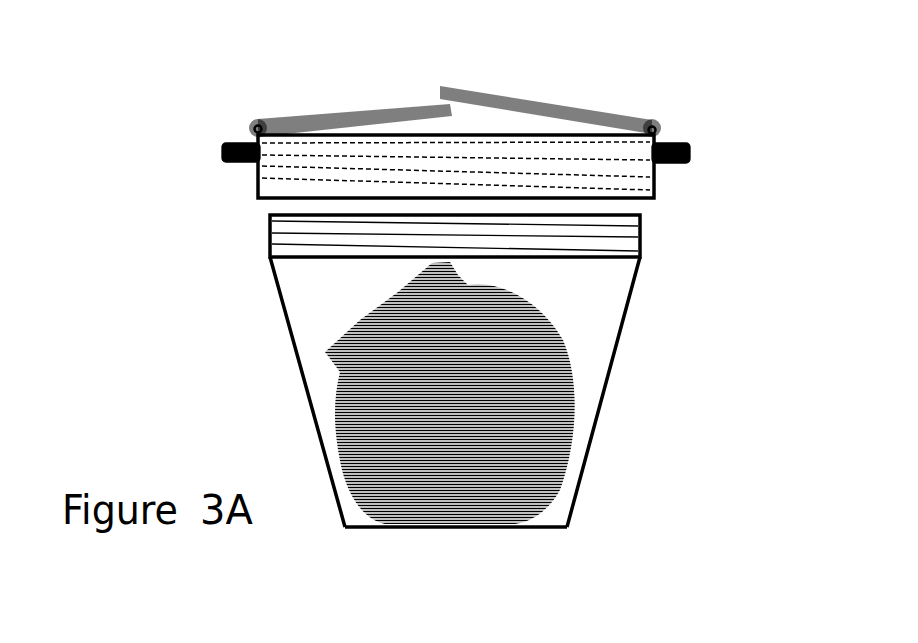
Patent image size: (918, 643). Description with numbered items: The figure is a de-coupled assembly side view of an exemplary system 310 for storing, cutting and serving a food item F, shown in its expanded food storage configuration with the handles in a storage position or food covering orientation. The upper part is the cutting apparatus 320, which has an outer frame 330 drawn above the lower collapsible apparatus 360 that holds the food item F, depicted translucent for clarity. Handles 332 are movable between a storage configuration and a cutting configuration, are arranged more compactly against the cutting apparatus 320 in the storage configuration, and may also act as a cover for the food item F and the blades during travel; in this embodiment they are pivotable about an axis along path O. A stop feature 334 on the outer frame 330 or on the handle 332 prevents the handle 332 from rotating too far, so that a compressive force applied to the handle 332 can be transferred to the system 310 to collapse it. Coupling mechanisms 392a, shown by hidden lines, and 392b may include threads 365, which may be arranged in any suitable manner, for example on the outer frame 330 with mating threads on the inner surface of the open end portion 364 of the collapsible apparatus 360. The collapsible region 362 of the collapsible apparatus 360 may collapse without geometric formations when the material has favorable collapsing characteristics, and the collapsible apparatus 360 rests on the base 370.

The system 310 is at (163, 52).
The cutting apparatus 320 is at (277, 97).
The outer frame 330 is at (592, 181).
The handles 332 is at (318, 118).
The stop feature 334 is at (222, 150).
The collapsible apparatus 360 is at (296, 440).
The collapsible region 362 is at (612, 352).
The open end portion 364 is at (590, 240).
The threads 365 is at (312, 232).
The base 370 is at (408, 530).
The coupling mechanism 392a is at (272, 182).
The coupling mechanism 392b is at (272, 233).
The food item F is at (530, 416).
The path O is at (405, 102).